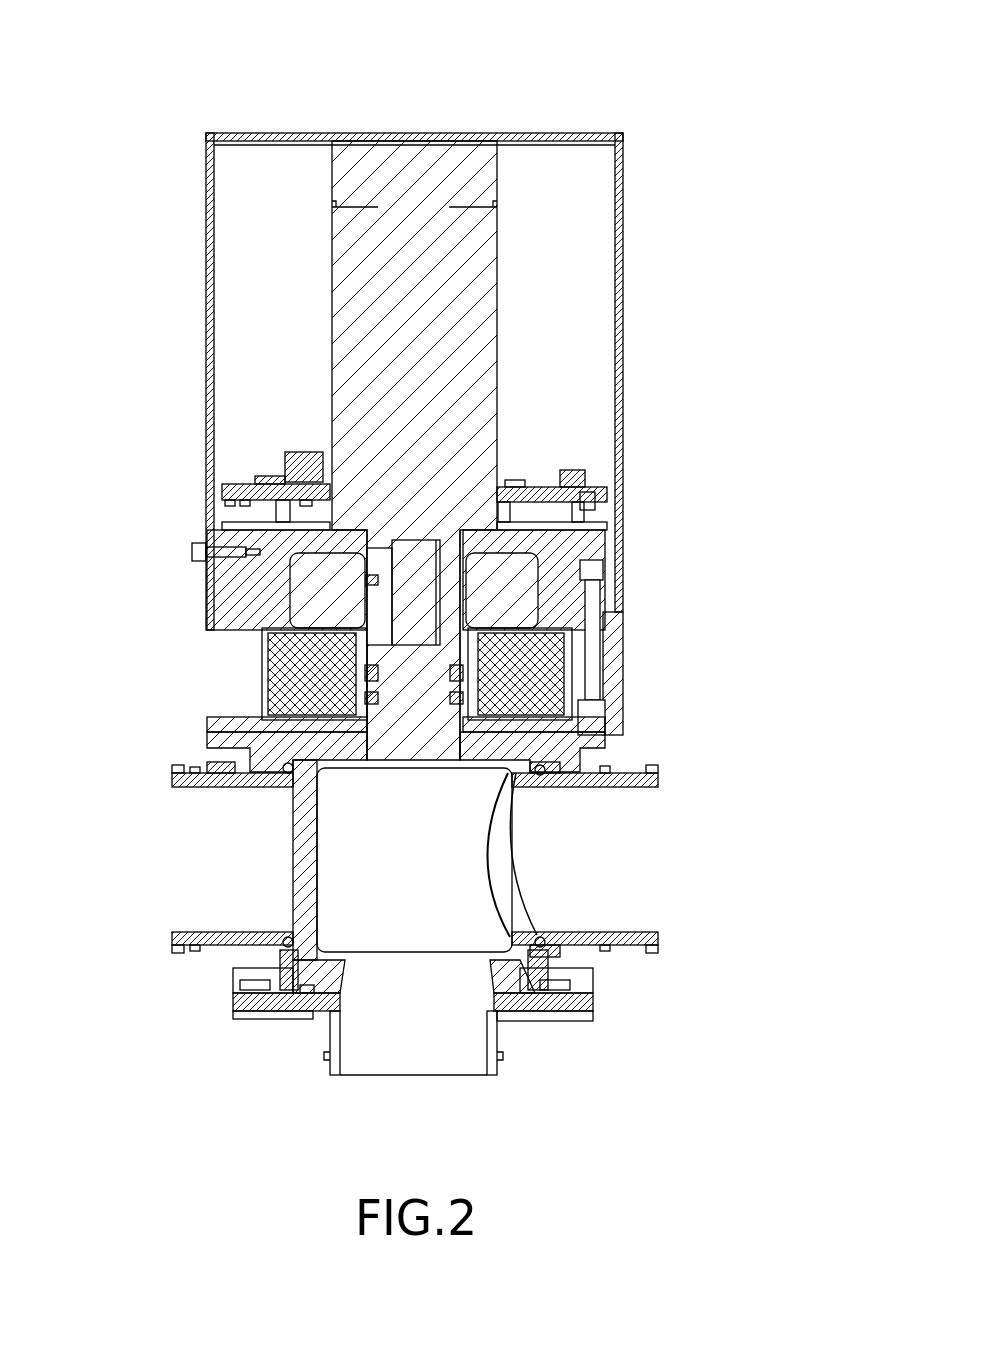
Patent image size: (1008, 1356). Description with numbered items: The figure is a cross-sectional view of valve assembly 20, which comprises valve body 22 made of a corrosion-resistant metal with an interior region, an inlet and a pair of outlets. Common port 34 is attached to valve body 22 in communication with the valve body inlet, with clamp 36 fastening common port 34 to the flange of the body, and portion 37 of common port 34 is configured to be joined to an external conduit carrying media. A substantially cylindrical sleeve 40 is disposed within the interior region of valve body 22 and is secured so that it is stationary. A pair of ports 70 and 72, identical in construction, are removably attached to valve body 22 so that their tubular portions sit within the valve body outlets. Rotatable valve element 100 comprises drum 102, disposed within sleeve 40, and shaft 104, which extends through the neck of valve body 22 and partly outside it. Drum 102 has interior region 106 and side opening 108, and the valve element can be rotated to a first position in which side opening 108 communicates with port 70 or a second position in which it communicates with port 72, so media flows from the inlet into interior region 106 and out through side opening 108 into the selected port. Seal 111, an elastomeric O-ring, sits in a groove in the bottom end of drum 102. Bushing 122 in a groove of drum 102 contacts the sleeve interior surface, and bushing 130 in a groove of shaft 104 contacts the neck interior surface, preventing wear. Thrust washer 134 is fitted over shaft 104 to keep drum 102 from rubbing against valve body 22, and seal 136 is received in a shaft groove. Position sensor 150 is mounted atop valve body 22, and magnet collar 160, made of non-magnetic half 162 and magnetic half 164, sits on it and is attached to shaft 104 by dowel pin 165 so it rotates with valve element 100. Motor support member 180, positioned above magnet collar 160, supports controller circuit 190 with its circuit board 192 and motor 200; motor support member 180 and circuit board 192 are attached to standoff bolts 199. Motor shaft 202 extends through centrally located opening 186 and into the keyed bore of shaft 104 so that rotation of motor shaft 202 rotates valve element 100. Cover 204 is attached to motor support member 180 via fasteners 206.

The valve assembly 20 is at (752, 172).
The valve body 22 is at (278, 737).
The common port 34 is at (472, 1088).
The clamp 36 is at (232, 992).
The portion 37 is at (497, 1062).
The sleeve 40 is at (540, 776).
The port 70 is at (668, 890).
The port 72 is at (168, 906).
The rotatable valve element 100 is at (290, 838).
The drum 102 is at (305, 890).
The shaft 104 is at (432, 677).
The interior region 106 is at (390, 848).
The side opening 108 is at (492, 885).
The seal 111 is at (302, 992).
The bushing 122 is at (298, 965).
The bushing 130 is at (520, 700).
The thrust washer 134 is at (300, 735).
The seal 136 is at (352, 697).
The position sensor 150 is at (282, 702).
The magnet collar 160 is at (520, 606).
The non-magnetic half 162 is at (298, 596).
The magnetic half 164 is at (545, 582).
The dowel pin 165 is at (370, 576).
The motor support member 180 is at (290, 606).
The centrally located opening 186 is at (467, 538).
The controller circuit 190 is at (248, 476).
The circuit board 192 is at (233, 491).
The standoff bolts 199 is at (600, 588).
The motor 200 is at (330, 258).
The motor shaft 202 is at (412, 597).
The cover 204 is at (553, 132).
The fasteners 206 is at (190, 548).